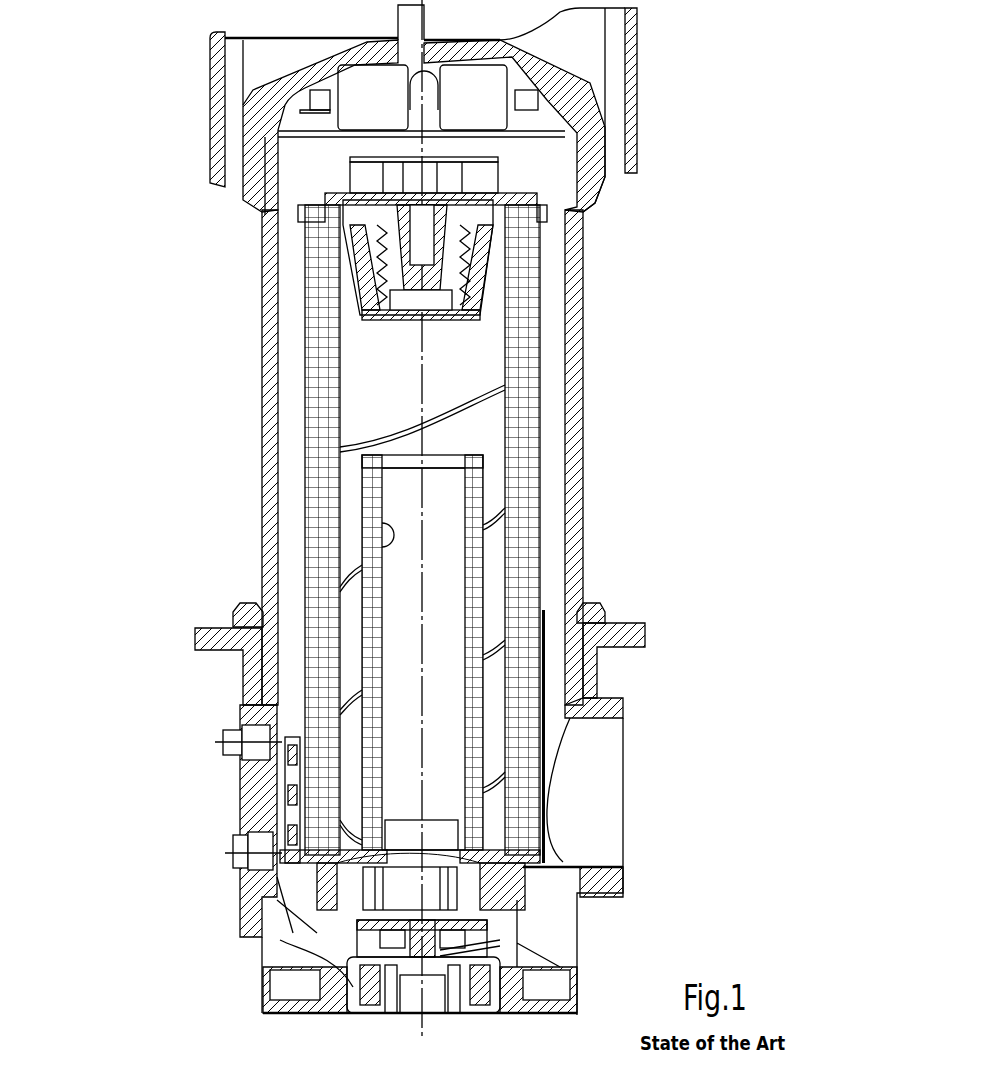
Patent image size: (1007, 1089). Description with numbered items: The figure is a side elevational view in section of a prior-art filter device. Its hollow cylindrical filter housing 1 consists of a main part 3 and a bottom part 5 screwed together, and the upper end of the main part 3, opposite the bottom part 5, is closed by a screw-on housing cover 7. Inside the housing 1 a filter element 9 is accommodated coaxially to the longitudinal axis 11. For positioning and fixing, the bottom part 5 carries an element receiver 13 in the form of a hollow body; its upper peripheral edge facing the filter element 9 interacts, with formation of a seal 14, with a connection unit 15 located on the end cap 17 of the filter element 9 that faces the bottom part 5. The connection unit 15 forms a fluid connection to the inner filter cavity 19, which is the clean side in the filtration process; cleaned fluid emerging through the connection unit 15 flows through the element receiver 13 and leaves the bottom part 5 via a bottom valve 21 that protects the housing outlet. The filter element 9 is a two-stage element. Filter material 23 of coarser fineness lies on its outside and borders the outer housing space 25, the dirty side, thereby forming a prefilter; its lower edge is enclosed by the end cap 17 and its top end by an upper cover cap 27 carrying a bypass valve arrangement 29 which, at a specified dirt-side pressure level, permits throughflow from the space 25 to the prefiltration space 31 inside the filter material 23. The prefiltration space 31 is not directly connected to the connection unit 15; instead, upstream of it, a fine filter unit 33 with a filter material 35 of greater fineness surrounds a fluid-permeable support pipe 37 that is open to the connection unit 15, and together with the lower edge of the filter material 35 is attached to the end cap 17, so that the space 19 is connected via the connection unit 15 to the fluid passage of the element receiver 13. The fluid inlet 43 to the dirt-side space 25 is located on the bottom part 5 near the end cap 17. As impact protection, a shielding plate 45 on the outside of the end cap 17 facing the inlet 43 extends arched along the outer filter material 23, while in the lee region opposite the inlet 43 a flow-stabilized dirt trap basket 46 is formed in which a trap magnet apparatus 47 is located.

The filter housing 1 is at (208, 367).
The main part 3 is at (262, 342).
The bottom part 5 is at (253, 813).
The housing cover 7 is at (577, 100).
The filter element 9 is at (547, 357).
The longitudinal axis 11 is at (422, 1027).
The element receiver 13 is at (333, 932).
The seal 14 is at (527, 897).
The connection unit 15 is at (567, 863).
The end cap 17 is at (500, 850).
The inner filter cavity 19 is at (447, 557).
The bottom valve 21 is at (560, 957).
The filter material 23 is at (490, 265).
The outer housing space 25 is at (293, 273).
The upper cover cap 27 is at (320, 195).
The bypass valve arrangement 29 is at (427, 300).
The prefiltration space 31 is at (377, 353).
The fine filter unit 33 is at (470, 440).
The filter material 35 is at (363, 480).
The support pipe 37 is at (390, 535).
The fluid inlet 43 is at (600, 725).
The shielding plate 45 is at (548, 658).
The dirt trap basket 46 is at (297, 838).
The trap magnet apparatus 47 is at (300, 790).